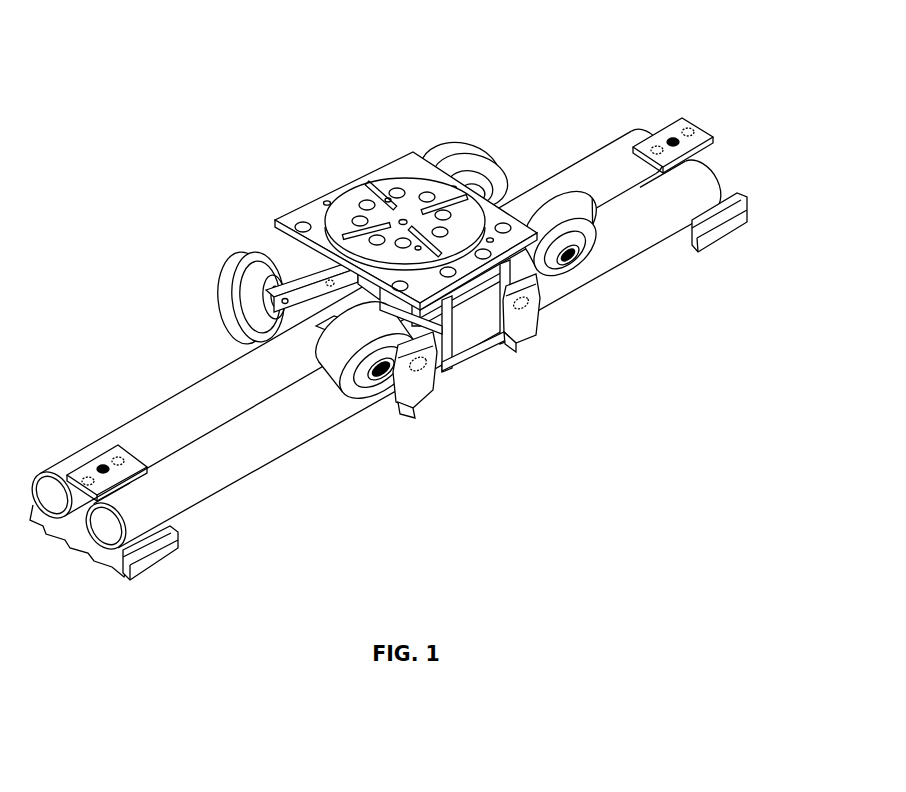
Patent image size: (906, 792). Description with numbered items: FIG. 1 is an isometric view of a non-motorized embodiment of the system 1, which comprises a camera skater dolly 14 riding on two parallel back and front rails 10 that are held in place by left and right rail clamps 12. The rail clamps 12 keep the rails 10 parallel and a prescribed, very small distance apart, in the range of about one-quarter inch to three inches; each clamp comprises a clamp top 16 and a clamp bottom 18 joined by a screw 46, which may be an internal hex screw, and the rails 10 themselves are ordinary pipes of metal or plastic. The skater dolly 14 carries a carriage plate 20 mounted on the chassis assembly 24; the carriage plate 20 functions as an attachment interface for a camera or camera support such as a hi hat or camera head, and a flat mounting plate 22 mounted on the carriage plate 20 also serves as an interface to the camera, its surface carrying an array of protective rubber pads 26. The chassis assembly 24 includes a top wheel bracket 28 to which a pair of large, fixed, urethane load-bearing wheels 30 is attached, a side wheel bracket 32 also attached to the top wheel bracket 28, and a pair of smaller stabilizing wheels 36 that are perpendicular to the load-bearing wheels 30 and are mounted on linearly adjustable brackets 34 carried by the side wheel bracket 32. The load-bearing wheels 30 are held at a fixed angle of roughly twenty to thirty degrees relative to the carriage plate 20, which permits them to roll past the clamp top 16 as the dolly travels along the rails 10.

The system 1 is at (170, 128).
The rails 10 is at (600, 165).
The rail clamps 12 is at (417, 370).
The camera skater dolly 14 is at (240, 232).
The clamp top 16 is at (90, 471).
The clamp bottom 18 is at (144, 562).
The carriage plate 20 is at (380, 160).
The flat mounting plate 22 is at (352, 200).
The chassis assembly 24 is at (464, 423).
The protective rubber pads 26 is at (386, 226).
The top wheel bracket 28 is at (290, 283).
The load-bearing wheels 30 is at (463, 141).
The side wheel bracket 32 is at (432, 378).
The linearly adjustable brackets 34 is at (528, 340).
The stabilizing wheels 36 is at (508, 351).
The screw 46 is at (103, 464).